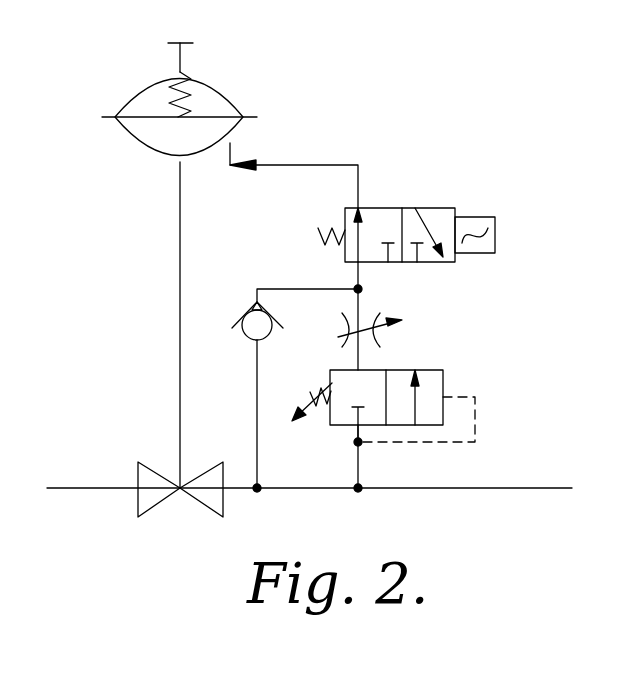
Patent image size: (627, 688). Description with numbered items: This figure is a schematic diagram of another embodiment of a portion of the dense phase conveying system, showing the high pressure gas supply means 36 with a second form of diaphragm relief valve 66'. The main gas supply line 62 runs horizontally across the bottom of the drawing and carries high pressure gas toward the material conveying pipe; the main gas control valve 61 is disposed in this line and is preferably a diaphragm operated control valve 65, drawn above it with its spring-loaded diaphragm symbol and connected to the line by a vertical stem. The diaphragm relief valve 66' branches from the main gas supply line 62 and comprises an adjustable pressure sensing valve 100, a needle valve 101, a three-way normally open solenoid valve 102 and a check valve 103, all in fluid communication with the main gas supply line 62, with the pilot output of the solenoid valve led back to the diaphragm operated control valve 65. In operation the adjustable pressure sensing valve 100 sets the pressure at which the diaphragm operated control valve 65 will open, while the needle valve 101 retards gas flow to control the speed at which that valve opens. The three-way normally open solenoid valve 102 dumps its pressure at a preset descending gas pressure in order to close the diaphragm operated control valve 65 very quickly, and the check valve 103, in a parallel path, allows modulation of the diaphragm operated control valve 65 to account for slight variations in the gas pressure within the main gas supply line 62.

The diaphragm operated control valve 65 is at (150, 78).
The diaphragm relief valve 66' is at (297, 143).
The three-way normally open solenoid valve 102 is at (452, 262).
The check valve 103 is at (245, 313).
The needle valve 101 is at (378, 350).
The adjustable pressure sensing valve 100 is at (477, 400).
The main gas control valve 61 is at (208, 468).
The main gas supply line 62 is at (75, 488).
The high pressure gas supply means 36 is at (518, 458).